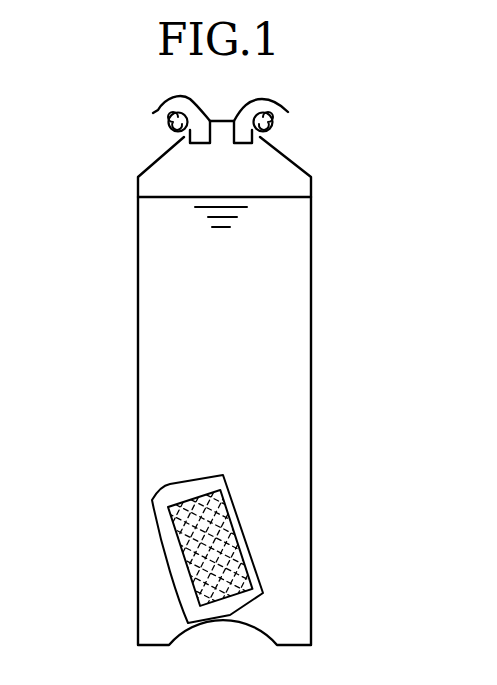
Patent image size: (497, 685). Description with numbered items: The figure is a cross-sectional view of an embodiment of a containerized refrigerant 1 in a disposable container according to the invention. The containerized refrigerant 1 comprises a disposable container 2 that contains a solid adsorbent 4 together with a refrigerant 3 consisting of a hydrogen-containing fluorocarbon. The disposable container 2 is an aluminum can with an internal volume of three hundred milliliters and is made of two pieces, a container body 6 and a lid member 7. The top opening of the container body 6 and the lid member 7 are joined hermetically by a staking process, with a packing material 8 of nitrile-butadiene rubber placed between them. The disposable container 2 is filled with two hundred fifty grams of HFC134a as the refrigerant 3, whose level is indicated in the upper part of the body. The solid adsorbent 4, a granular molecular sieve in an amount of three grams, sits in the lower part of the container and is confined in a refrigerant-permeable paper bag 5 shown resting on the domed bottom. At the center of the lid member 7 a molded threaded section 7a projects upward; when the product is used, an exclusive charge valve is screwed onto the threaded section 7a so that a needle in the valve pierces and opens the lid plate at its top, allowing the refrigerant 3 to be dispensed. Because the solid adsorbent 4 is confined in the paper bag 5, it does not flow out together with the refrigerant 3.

The containerized refrigerant 1 is at (207, 370).
The disposable container 2 is at (138, 323).
The refrigerant 3 is at (172, 428).
The solid adsorbent 4 is at (180, 546).
The refrigerant-permeable paper bag 5 is at (190, 592).
The container body 6 is at (299, 169).
The lid member 7 is at (288, 112).
The threaded section 7a is at (153, 113).
The packing material 8 is at (172, 128).